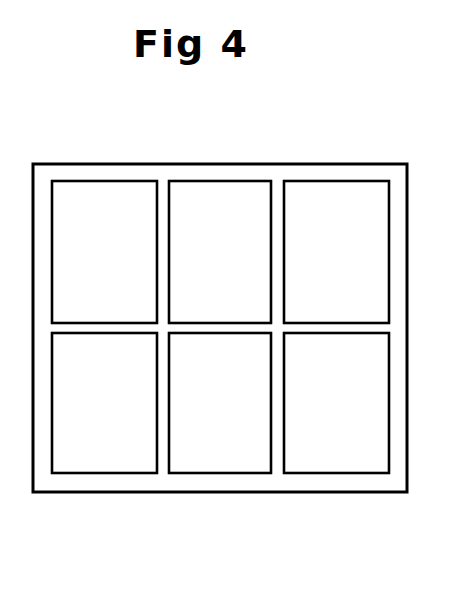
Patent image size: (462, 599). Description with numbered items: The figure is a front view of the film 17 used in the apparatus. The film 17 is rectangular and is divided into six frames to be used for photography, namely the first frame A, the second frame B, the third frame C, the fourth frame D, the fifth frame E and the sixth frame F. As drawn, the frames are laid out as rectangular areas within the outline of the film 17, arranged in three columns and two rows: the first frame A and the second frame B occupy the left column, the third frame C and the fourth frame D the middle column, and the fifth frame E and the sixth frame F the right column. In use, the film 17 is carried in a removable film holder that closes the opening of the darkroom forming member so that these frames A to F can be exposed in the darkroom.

The film 17 is at (412, 186).
The first frame A is at (86, 189).
The second frame B is at (88, 463).
The third frame C is at (223, 189).
The fourth frame D is at (222, 461).
The fifth frame E is at (345, 190).
The sixth frame F is at (345, 461).